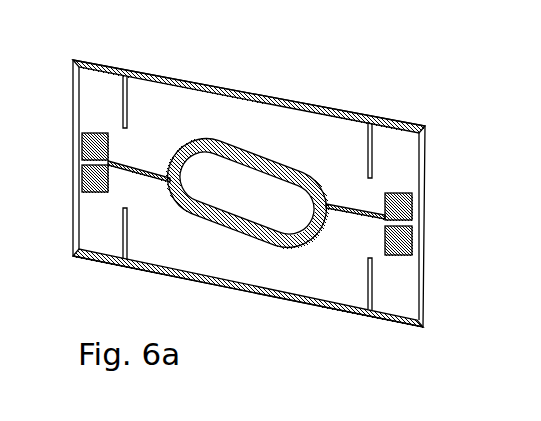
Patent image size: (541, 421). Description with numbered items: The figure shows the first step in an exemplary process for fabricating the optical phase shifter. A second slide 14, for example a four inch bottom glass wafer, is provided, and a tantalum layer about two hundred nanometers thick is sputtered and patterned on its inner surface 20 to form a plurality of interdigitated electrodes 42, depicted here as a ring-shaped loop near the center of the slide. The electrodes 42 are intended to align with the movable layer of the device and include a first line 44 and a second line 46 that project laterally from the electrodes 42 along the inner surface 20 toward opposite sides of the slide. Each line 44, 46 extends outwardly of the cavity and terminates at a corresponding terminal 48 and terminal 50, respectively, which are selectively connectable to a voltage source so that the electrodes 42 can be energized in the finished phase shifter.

The second slide 14 is at (265, 87).
The inner surface 20 is at (266, 273).
The interdigitated electrodes 42 is at (308, 246).
The first line 44 is at (146, 178).
The second line 46 is at (369, 212).
The terminal 48 is at (85, 160).
The terminal 50 is at (408, 248).